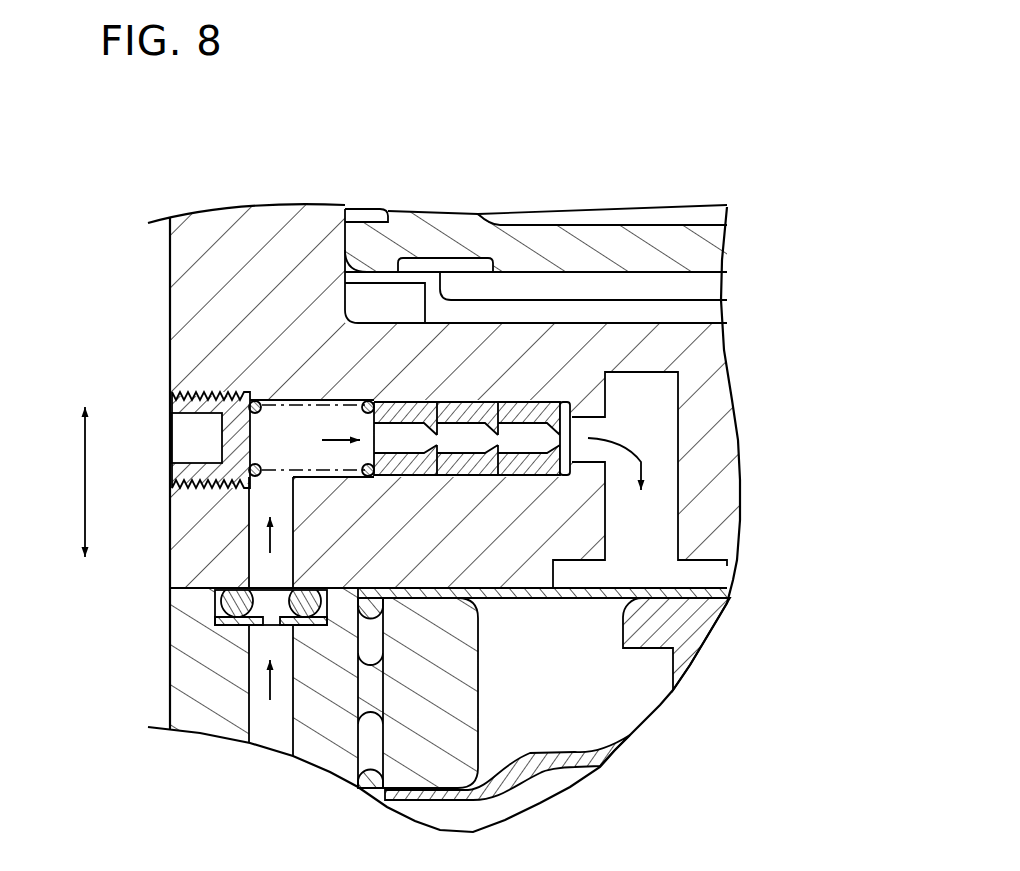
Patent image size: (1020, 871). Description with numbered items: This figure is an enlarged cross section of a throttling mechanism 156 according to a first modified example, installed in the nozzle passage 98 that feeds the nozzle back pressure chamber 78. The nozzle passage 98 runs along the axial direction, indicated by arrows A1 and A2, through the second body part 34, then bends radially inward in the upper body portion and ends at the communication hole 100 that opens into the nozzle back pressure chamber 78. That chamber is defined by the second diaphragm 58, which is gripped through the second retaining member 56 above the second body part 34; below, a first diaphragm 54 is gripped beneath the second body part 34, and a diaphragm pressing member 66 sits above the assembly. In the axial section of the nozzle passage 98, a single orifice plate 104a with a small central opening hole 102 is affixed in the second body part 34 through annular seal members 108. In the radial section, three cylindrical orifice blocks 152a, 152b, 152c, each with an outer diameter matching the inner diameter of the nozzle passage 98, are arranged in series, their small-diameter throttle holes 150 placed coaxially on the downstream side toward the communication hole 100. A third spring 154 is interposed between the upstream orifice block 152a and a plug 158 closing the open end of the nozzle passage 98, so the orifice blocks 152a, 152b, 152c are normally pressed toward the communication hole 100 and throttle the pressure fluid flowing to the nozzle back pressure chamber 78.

The second body part 34 is at (483, 668).
The first diaphragm 54 is at (550, 760).
The second retaining member 56 is at (700, 627).
The second diaphragm 58 is at (587, 600).
The diaphragm pressing member 66 is at (632, 245).
The nozzle back pressure chamber 78 is at (724, 586).
The nozzle passage 98 is at (270, 730).
The communication hole 100 is at (647, 524).
The opening hole 102 is at (275, 625).
The orifice plate 104a is at (262, 623).
The annular seal member 108 is at (232, 607).
The throttle hole 150 is at (411, 428).
The upstream side orifice block 152a is at (377, 403).
The orifice block 152b is at (444, 405).
The orifice block 152c is at (508, 405).
The third spring 154 is at (255, 467).
The throttling mechanism 156 is at (343, 367).
The plug 158 is at (250, 397).
The arrow A1 is at (88, 467).
The arrow A2 is at (88, 567).